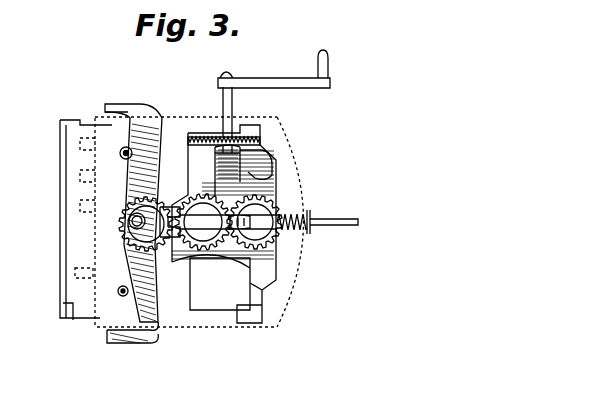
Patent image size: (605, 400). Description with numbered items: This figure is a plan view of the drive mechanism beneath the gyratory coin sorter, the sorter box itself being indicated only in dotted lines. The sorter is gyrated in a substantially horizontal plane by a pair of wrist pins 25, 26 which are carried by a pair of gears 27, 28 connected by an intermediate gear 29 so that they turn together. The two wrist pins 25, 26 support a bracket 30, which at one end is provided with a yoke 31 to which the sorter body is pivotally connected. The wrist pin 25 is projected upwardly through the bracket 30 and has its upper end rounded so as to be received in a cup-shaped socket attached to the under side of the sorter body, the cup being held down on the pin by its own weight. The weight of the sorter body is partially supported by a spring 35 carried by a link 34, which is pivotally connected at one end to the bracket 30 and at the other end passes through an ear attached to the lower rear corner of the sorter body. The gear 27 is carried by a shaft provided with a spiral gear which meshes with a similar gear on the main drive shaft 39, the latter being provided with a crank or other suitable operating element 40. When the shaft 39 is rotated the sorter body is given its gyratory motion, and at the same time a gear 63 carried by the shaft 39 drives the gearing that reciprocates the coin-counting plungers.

The wrist pin 25 is at (262, 213).
The wrist pin 26 is at (141, 215).
The gear 27 is at (274, 213).
The gear 28 is at (133, 246).
The intermediate gear 29 is at (211, 205).
The bracket 30 is at (213, 250).
The yoke 31 is at (157, 117).
The link 34 is at (359, 222).
The spring 35 is at (293, 233).
The main drive shaft 39 is at (233, 101).
The crank 40 is at (328, 66).
The gear 63 is at (263, 141).